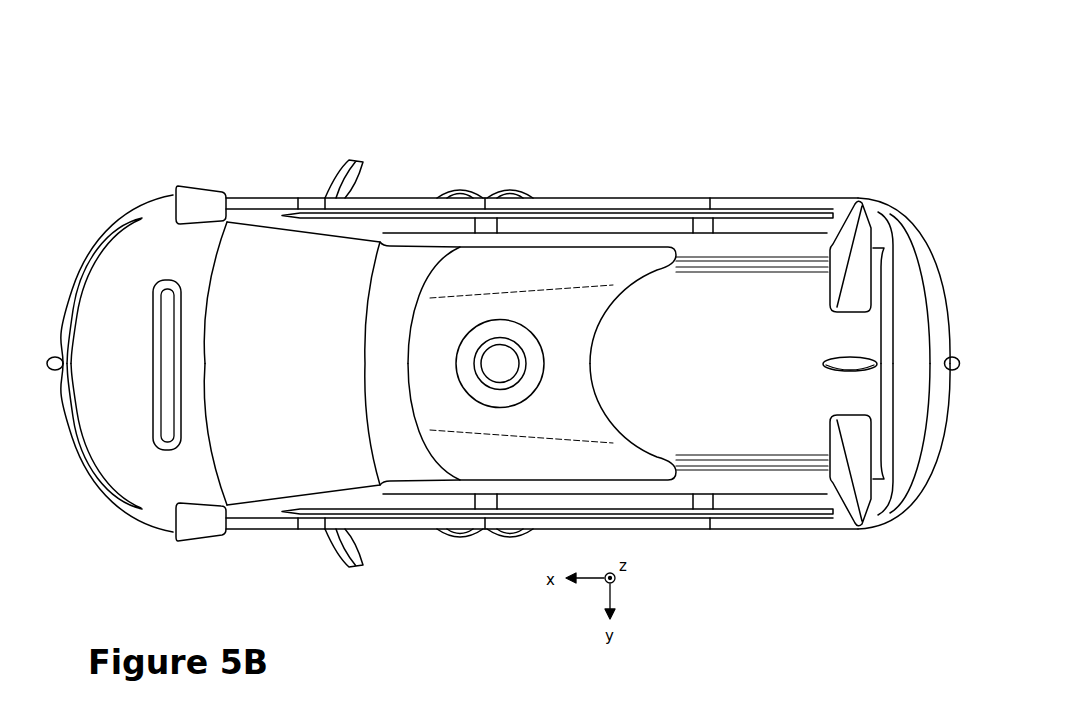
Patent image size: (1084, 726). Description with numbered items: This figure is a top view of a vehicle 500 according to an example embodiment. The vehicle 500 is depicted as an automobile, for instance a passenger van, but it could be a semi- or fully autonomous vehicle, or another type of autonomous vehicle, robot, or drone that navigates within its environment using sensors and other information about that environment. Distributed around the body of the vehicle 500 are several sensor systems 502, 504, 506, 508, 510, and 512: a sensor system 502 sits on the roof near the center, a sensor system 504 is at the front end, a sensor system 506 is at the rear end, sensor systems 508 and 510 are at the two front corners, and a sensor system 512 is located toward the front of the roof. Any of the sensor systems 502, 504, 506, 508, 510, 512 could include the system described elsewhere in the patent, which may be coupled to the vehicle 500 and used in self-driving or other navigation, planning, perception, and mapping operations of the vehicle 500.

The vehicle 500 is at (846, 124).
The sensor system 502 is at (510, 322).
The sensor system 504 is at (53, 352).
The sensor system 506 is at (953, 355).
The sensor system 508 is at (184, 186).
The sensor system 510 is at (184, 541).
The sensor system 512 is at (409, 372).